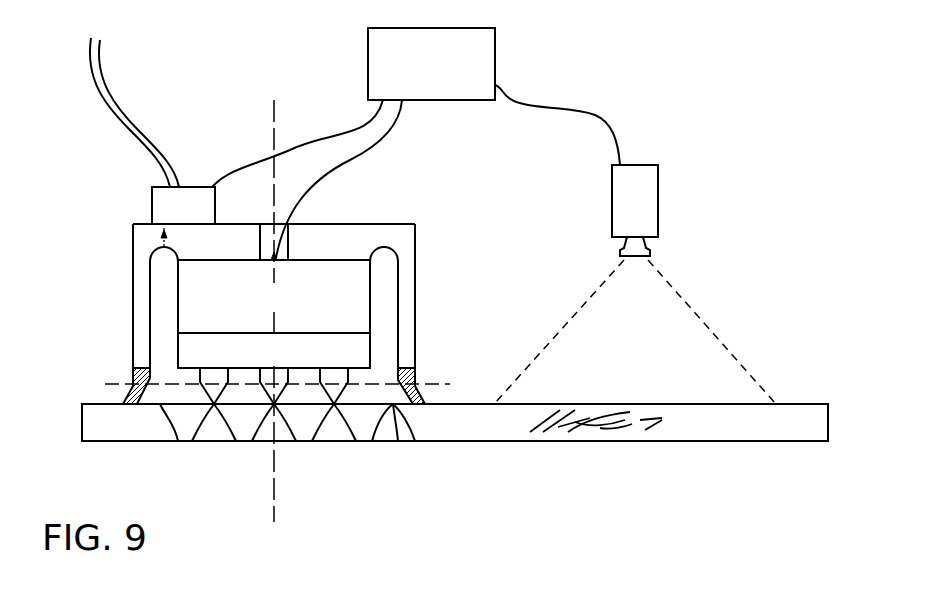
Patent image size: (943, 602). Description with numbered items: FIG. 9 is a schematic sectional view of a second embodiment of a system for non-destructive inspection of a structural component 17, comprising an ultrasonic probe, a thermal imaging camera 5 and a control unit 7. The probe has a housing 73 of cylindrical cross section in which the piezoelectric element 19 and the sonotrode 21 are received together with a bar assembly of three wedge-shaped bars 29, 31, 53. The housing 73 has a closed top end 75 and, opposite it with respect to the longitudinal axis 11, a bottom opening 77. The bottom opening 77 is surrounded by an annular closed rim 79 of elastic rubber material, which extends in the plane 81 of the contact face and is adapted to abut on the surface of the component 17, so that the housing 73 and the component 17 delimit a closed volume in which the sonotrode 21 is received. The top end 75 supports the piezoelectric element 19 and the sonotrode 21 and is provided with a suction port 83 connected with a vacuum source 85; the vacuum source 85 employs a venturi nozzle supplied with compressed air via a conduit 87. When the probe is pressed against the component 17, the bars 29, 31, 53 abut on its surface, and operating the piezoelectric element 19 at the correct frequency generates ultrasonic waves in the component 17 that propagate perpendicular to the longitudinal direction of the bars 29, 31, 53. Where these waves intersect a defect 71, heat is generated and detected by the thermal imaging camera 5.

The thermal imaging camera 5 is at (643, 211).
The control unit 7 is at (439, 73).
The longitudinal axis 11 is at (278, 103).
The structural component 17 is at (505, 424).
The piezoelectric element 19 is at (286, 308).
The sonotrode 21 is at (286, 362).
The wedge-shaped bar 29 is at (194, 441).
The wedge-shaped bar 31 is at (252, 441).
The wedge-shaped bar 53 is at (338, 441).
The defect 71 is at (617, 432).
The housing 73 is at (417, 232).
The closed top end 75 is at (385, 224).
The bottom opening 77 is at (399, 441).
The annular closed rim 79 is at (420, 383).
The plane 81 is at (118, 384).
The suction port 83 is at (158, 243).
The vacuum source 85 is at (190, 197).
The conduit 87 is at (108, 100).